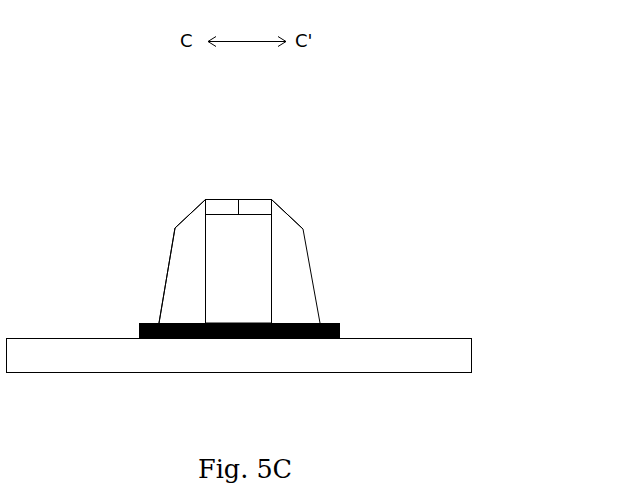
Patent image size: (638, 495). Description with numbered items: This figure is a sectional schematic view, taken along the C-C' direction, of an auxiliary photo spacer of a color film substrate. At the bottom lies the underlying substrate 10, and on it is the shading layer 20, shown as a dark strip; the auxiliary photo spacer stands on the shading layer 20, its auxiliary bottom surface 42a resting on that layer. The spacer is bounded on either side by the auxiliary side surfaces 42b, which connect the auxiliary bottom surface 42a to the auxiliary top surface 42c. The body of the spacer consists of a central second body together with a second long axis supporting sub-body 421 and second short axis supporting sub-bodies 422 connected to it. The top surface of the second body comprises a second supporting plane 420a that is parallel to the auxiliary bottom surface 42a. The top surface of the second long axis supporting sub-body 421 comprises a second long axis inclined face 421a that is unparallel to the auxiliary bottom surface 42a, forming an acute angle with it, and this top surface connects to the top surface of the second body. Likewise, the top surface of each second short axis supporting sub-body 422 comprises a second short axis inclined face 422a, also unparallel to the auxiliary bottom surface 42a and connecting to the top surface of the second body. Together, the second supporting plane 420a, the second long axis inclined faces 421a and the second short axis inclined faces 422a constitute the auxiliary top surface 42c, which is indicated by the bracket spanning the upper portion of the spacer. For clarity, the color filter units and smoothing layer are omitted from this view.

The underlying substrate 10 is at (455, 353).
The shading layer 20 is at (342, 325).
The auxiliary bottom surface 42a is at (257, 338).
The auxiliary side surfaces 42b is at (160, 310).
The auxiliary top surface 42c is at (356, 140).
The second supporting plane 420a is at (237, 197).
The second long axis supporting sub-body 421 is at (234, 298).
The second long axis inclined face 421a is at (218, 208).
The second short axis supporting sub-body 422 is at (185, 272).
The second short axis inclined face 422a is at (185, 207).